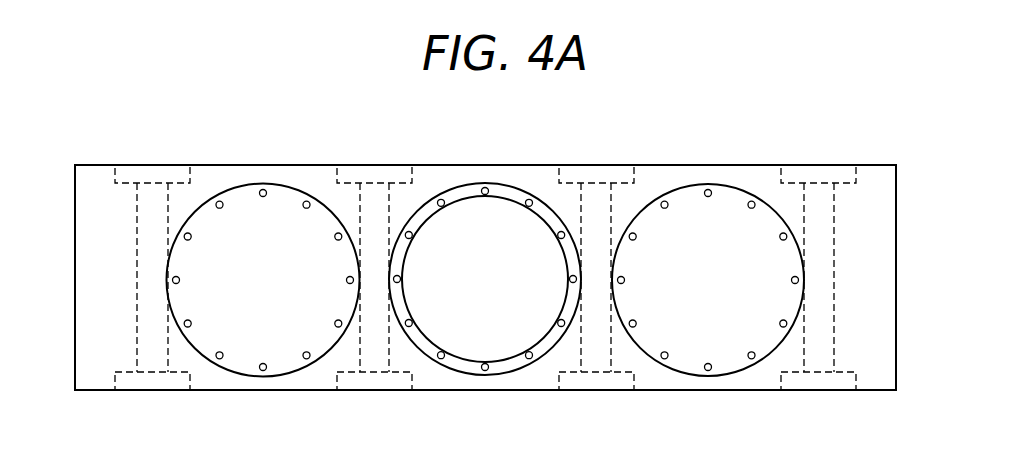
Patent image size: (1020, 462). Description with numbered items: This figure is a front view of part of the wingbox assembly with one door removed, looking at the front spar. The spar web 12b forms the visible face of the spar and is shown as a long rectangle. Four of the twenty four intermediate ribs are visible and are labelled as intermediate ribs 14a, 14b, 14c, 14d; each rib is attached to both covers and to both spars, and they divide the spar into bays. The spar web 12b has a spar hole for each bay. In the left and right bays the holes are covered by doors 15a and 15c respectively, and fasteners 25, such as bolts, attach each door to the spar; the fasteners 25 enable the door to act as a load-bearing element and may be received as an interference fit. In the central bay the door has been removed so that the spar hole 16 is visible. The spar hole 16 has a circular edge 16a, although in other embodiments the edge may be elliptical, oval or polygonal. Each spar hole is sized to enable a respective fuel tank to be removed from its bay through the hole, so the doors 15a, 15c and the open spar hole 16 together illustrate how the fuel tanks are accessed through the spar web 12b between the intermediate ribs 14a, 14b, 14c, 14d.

The spar web 12b is at (107, 292).
The intermediate rib 14a is at (143, 149).
The intermediate rib 14b is at (373, 158).
The intermediate rib 14c is at (622, 147).
The intermediate rib 14d is at (830, 152).
The door 15a is at (251, 218).
The door 15c is at (728, 228).
The spar hole 16 is at (466, 272).
The circular edge 16a is at (563, 304).
The fasteners 25 is at (262, 375).